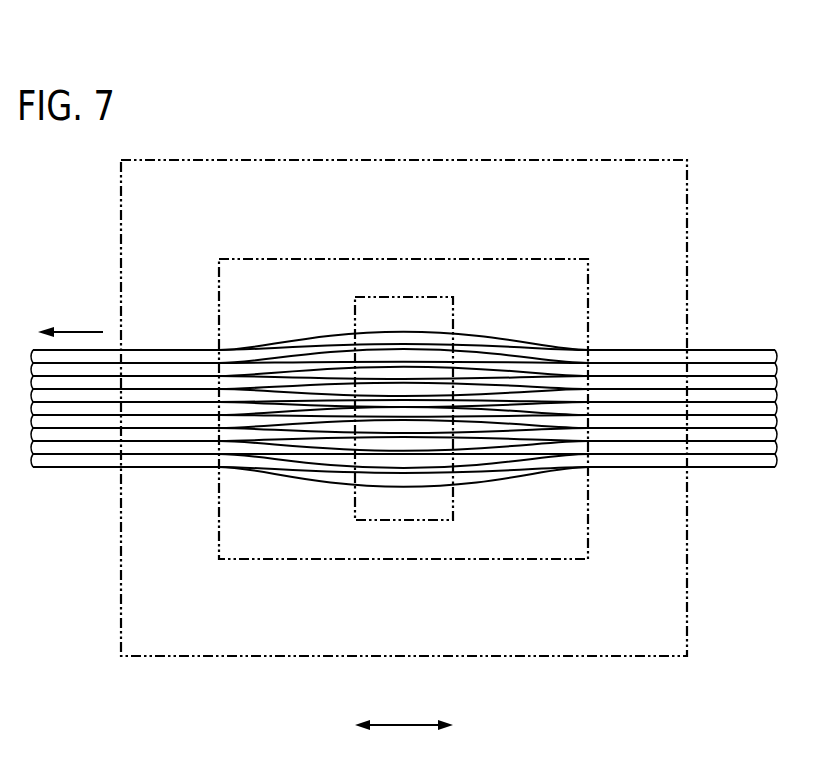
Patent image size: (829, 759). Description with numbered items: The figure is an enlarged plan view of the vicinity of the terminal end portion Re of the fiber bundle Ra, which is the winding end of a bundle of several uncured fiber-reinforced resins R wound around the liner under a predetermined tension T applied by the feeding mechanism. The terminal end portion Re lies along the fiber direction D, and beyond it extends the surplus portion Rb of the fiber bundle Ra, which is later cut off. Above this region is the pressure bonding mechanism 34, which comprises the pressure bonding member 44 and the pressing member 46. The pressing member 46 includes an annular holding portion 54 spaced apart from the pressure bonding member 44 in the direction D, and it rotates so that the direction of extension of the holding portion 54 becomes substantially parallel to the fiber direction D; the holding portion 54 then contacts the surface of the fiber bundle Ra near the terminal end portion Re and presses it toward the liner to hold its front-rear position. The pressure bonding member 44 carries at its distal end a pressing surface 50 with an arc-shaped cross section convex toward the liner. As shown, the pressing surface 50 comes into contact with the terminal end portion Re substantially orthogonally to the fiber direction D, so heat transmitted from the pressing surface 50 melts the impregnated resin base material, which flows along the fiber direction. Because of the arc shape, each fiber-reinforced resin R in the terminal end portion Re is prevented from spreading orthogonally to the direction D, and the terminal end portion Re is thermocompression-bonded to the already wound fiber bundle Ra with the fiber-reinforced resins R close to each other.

The pressure bonding mechanism 34 is at (385, 450).
The pressure bonding member 44 is at (385, 450).
The pressing surface 50 is at (382, 520).
The pressing member 46 is at (404, 450).
The holding portion 54 is at (612, 656).
The fiber reinforced resin R is at (404, 379).
The fiber bundle Ra is at (273, 473).
The surplus portion Rb is at (60, 469).
The terminal end portion Re is at (397, 329).
The tension T is at (70, 318).
The fiber direction D is at (404, 712).